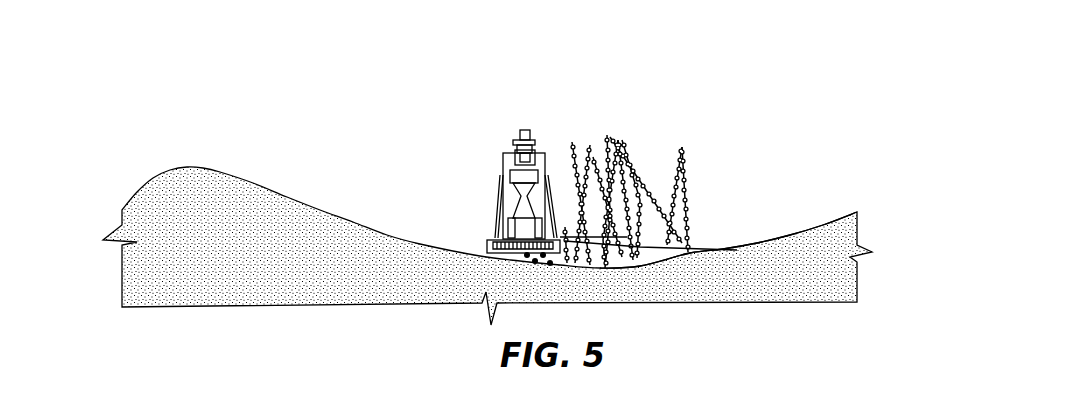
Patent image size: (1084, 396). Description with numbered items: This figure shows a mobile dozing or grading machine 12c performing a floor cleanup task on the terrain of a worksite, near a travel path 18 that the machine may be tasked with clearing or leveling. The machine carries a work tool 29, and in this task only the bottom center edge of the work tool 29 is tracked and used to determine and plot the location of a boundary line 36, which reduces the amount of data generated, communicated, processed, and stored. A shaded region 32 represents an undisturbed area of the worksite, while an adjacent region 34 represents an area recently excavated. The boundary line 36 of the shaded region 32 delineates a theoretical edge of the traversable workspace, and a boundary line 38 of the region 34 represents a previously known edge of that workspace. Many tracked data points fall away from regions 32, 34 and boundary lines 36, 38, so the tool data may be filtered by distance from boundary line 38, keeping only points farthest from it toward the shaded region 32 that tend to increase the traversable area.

The mobile dozing or grading machine 12c is at (507, 155).
The travel path 18 is at (418, 177).
The work tool 29 is at (487, 243).
The shaded region 32 is at (355, 275).
The region 34 is at (642, 262).
The boundary line 36 is at (717, 250).
The boundary line 38 is at (737, 250).